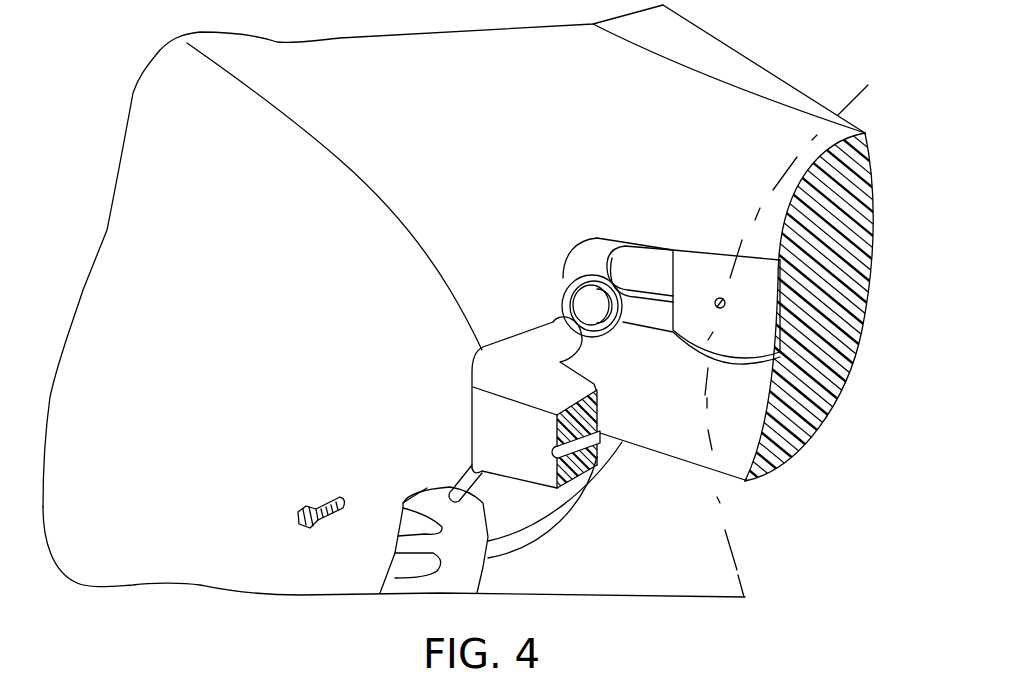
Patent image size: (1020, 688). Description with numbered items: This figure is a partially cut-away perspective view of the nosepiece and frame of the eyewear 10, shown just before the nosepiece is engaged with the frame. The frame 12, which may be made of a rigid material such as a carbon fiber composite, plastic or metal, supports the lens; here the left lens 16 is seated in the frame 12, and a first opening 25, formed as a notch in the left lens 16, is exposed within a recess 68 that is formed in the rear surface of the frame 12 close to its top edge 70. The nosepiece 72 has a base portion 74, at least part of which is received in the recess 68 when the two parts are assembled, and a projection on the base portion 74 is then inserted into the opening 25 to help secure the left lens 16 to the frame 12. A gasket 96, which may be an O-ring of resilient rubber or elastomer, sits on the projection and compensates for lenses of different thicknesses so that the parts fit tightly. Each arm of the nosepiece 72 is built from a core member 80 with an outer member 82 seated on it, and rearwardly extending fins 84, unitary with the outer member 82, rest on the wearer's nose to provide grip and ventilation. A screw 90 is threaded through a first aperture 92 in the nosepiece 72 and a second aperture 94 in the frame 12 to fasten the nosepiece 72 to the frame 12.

The eyewear 10 is at (136, 70).
The frame 12 is at (543, 122).
The left lens 16 is at (230, 312).
The first opening 25 is at (657, 260).
The recess 68 is at (660, 338).
The top edge 70 is at (770, 67).
The nosepiece 72 is at (412, 497).
The base portion 74 is at (505, 340).
The core member 80 is at (460, 487).
The outer member 82 is at (477, 580).
The fins 84 is at (393, 549).
The screw 90 is at (303, 508).
The first aperture 92 is at (553, 451).
The second aperture 94 is at (727, 298).
The gasket 96 is at (569, 300).